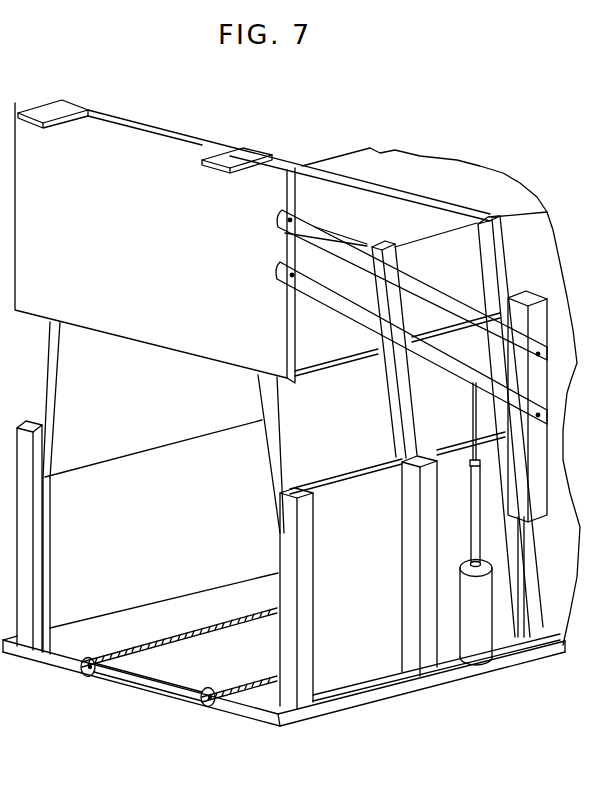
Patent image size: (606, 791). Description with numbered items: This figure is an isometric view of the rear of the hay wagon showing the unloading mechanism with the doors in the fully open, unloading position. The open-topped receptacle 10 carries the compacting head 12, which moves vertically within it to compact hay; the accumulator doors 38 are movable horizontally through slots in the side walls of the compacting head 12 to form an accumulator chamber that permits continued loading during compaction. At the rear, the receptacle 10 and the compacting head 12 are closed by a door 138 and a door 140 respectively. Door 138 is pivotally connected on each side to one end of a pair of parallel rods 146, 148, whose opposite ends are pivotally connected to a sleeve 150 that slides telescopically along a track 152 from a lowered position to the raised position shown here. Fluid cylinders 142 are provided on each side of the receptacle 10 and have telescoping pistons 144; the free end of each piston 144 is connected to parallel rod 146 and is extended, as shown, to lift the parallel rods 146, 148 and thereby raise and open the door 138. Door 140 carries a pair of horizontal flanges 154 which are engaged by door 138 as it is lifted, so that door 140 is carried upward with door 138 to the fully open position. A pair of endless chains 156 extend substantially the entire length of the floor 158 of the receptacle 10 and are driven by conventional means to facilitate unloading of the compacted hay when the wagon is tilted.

The receptacle 10 is at (560, 474).
The compacting head 12 is at (553, 212).
The accumulator doors 38 is at (348, 374).
The door 138 is at (106, 270).
The door 140 is at (133, 123).
The fluid cylinders 142 is at (497, 658).
The telescoping piston 144 is at (468, 489).
The parallel rod 146 is at (449, 368).
The parallel rod 148 is at (417, 281).
The sleeve 150 is at (547, 442).
The track 152 is at (522, 622).
The horizontal flanges 154 is at (42, 125).
The endless chains 156 is at (237, 628).
The floor 158 is at (98, 635).